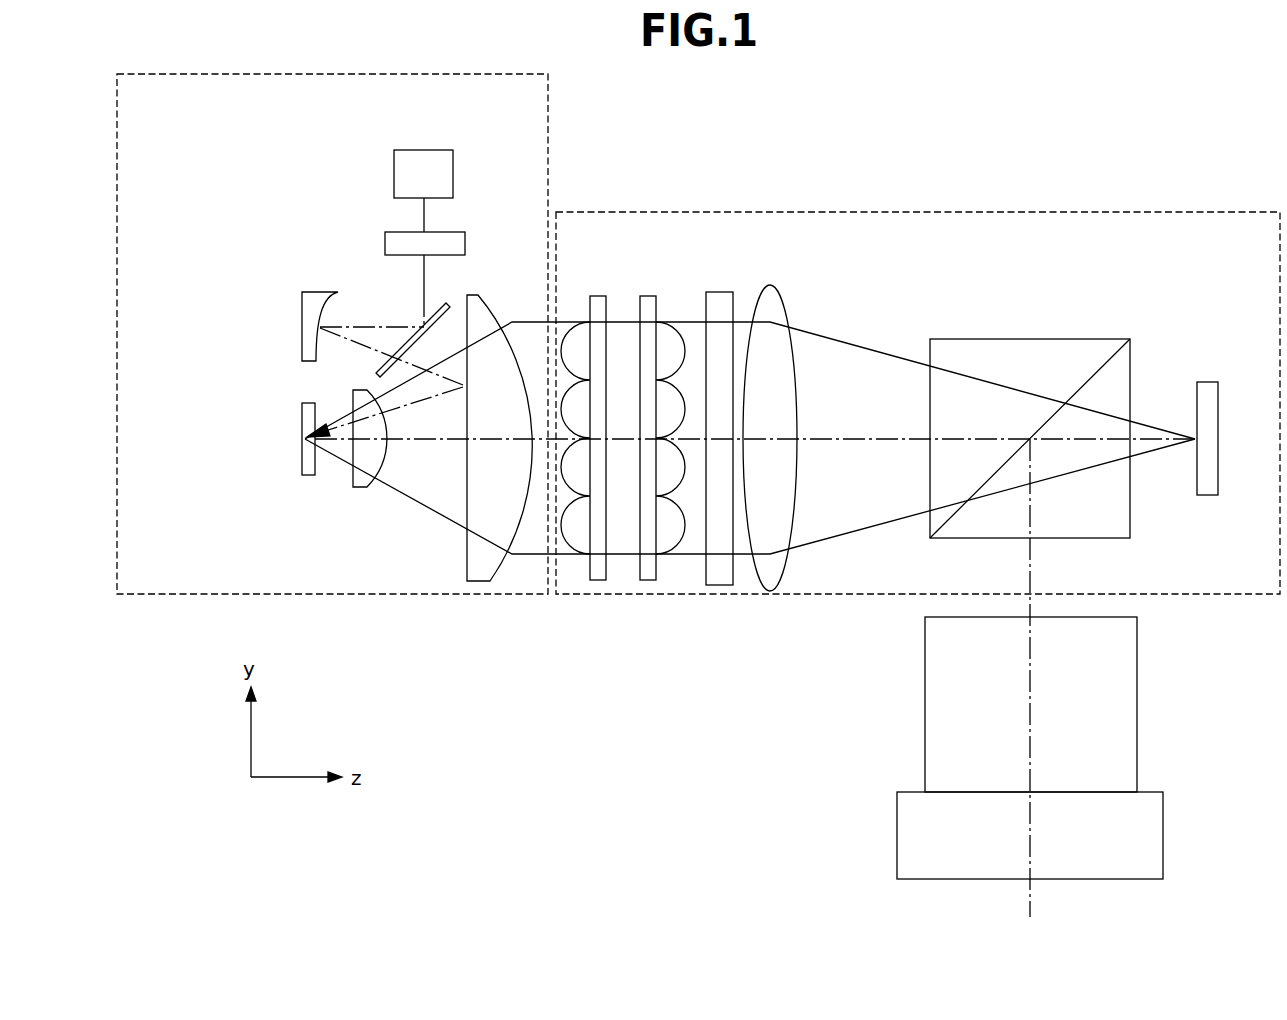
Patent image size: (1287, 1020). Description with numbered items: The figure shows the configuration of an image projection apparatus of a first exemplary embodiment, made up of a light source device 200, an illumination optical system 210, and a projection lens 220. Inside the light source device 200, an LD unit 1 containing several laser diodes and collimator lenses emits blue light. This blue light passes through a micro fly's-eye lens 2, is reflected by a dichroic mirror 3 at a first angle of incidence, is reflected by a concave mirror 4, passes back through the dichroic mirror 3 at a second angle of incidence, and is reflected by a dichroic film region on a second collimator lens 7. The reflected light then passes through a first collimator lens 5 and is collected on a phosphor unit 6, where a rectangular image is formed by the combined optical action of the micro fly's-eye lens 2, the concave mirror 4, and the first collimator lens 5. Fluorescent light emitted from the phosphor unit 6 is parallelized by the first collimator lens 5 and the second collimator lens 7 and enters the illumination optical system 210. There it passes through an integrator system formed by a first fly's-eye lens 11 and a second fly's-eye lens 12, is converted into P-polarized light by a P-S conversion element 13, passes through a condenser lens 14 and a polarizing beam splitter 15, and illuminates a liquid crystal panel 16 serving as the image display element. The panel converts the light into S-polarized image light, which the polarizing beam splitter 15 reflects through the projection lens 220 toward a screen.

The LD unit 1 is at (394, 174).
The micro fly's-eye lens 2 is at (385, 243).
The dichroic mirror 3 is at (418, 329).
The concave mirror 4 is at (302, 326).
The first collimator lens 5 is at (357, 487).
The phosphor unit 6 is at (302, 424).
The second collimator lens 7 is at (477, 295).
The first fly's-eye lens 11 is at (598, 295).
The second fly's-eye lens 12 is at (647, 295).
The P-S conversion element 13 is at (718, 292).
The condenser lens 14 is at (769, 285).
The polarizing beam splitter 15 is at (1026, 339).
The liquid crystal panel 16 is at (1205, 382).
The light source device 200 is at (168, 594).
The illumination optical system 210 is at (858, 212).
The projection lens 220 is at (1137, 705).